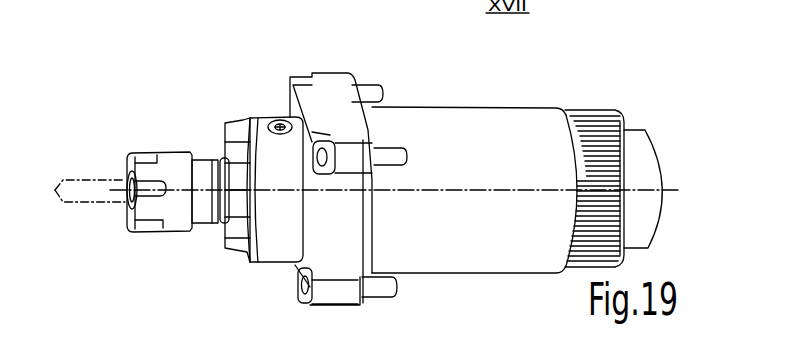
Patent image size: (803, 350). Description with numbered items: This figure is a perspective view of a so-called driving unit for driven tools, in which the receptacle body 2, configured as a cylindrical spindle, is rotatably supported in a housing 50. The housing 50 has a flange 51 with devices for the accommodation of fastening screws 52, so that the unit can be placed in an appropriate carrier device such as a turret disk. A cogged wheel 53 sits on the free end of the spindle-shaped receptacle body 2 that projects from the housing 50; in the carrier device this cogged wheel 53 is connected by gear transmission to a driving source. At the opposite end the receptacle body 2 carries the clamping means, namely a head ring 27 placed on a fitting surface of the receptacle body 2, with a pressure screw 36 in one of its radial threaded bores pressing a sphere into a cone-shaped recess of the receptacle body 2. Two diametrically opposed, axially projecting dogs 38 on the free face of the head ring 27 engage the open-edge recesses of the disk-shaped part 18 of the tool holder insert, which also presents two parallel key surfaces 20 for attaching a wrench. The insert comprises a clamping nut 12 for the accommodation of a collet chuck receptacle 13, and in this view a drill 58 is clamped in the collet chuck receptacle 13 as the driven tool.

The receptacle body 2 is at (640, 147).
The clamping nut 12 is at (173, 210).
The collet chuck receptacle 13 is at (207, 208).
The disk-shaped part 18 is at (218, 147).
The key surfaces 20 is at (238, 230).
The head ring 27 is at (260, 127).
The pressure screw 36 is at (278, 117).
The dogs 38 is at (238, 120).
The housing 50 is at (483, 118).
The flange 51 is at (323, 93).
The fastening screws 52 is at (393, 153).
The cogged wheel 53 is at (588, 125).
The drill 58 is at (83, 193).